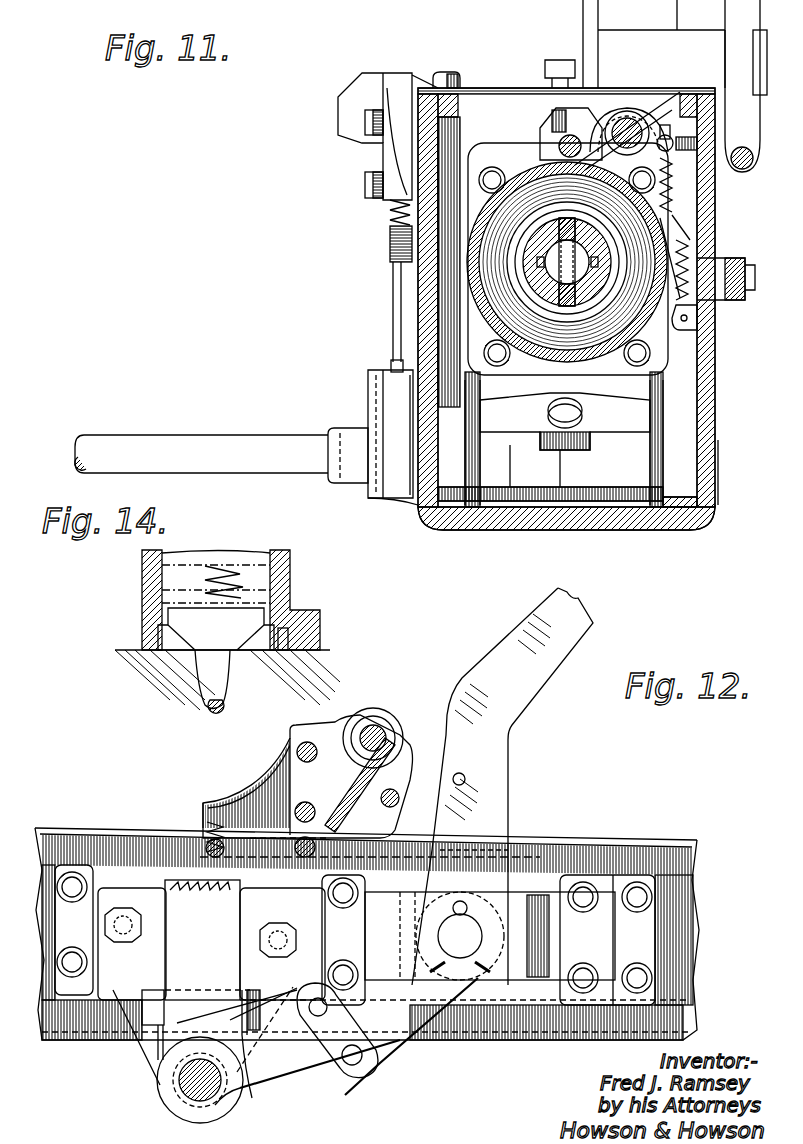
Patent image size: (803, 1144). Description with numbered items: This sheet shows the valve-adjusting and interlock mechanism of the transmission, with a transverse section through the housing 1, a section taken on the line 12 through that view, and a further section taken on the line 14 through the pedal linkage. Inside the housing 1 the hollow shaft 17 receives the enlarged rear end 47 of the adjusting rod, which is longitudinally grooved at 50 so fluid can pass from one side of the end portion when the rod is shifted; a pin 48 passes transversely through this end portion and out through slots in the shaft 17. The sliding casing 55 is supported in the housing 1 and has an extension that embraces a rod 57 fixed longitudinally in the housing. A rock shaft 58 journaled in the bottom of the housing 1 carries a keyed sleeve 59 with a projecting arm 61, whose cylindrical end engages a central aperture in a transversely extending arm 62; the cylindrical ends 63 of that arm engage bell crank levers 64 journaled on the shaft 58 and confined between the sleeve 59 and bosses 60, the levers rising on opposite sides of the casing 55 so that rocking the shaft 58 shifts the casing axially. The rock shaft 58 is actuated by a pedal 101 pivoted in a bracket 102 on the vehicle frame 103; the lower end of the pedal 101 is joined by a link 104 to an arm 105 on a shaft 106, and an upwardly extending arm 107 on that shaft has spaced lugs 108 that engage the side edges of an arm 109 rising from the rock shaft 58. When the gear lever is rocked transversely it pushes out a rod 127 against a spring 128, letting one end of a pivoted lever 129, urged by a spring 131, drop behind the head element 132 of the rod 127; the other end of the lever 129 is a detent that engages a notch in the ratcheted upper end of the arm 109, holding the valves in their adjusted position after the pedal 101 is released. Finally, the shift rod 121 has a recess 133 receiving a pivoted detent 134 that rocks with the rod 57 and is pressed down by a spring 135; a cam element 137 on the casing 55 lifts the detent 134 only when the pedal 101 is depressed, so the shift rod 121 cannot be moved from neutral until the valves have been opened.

In FIG. 11, the housing 1 is at (715, 372).
In FIG. 11, the section line 12— 12 is at (407, 555).
In FIG. 12, the section line 14— 14 is at (378, 736).
In FIG. 11, the hollow shaft 17 is at (560, 296).
In FIG. 11, the enlarged rear end of rod 47 is at (580, 290).
In FIG. 11, the pin 48 is at (565, 224).
In FIG. 11, the longitudinal groove 50 is at (598, 272).
In FIG. 11, the casing 55 is at (482, 166).
In FIG. 11, the rod 57 is at (556, 145).
In FIG. 11, the rock shaft 58 is at (352, 432).
In FIG. 11, the sleeve 59 is at (602, 500).
In FIG. 11, the bosses 60 is at (468, 505).
In FIG. 11, the projecting arm 61 is at (572, 462).
In FIG. 11, the transversely extending arm 62 is at (603, 448).
In FIG. 11, the cylindrical ends of arm 63 is at (470, 430).
In FIG. 11, the bell crank levers 64 is at (478, 395).
In FIG. 12, the pedal 101 is at (510, 778).
In FIG. 12, the bracket 102 is at (510, 985).
In FIG. 12, the fixed frame or chassis 103 is at (650, 842).
In FIG. 12, the link 104 is at (328, 1048).
In FIG. 12, the arm 105 is at (258, 1090).
In FIG. 11, the shaft 106 is at (205, 435).
In FIG. 12, the shaft 106 is at (178, 1090).
In FIG. 11, the upwardly extending arm 107 is at (370, 378).
In FIG. 12, the upwardly extending arm 107 is at (160, 1052).
In FIG. 11, the lugs 108 is at (393, 362).
In FIG. 12, the lugs 108 is at (150, 990).
In FIG. 11, the arm 109 is at (393, 302).
In FIG. 12, the arm 109 is at (242, 912).
In FIG. 11, the shift rod 121 is at (650, 112).
In FIG. 14, the rod 127 is at (216, 667).
In FIG. 12, the rod 127 is at (380, 728).
In FIG. 14, the spring 128 is at (225, 570).
In FIG. 11, the pivoted lever 129 is at (390, 243).
In FIG. 14, the pivoted lever 129 is at (290, 637).
In FIG. 12, the pivoted lever 129 is at (318, 848).
In FIG. 11, the spring 131 is at (392, 210).
In FIG. 12, the spring 131 is at (205, 816).
In FIG. 14, the head element 132 is at (142, 632).
In FIG. 12, the head element 132 is at (390, 742).
In FIG. 11, the recess 133 is at (616, 118).
In FIG. 11, the pivoted detent 134 is at (630, 112).
In FIG. 11, the spring 135 is at (697, 187).
In FIG. 11, the cam element 137 is at (697, 143).